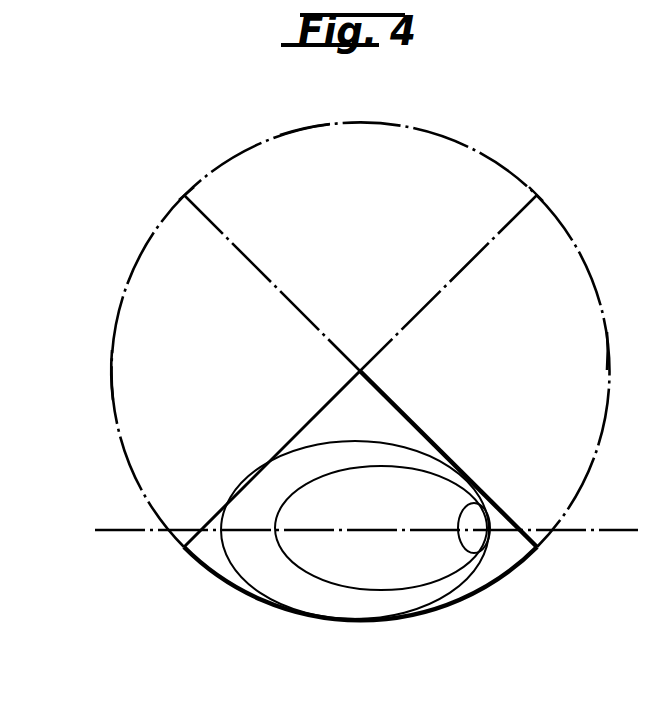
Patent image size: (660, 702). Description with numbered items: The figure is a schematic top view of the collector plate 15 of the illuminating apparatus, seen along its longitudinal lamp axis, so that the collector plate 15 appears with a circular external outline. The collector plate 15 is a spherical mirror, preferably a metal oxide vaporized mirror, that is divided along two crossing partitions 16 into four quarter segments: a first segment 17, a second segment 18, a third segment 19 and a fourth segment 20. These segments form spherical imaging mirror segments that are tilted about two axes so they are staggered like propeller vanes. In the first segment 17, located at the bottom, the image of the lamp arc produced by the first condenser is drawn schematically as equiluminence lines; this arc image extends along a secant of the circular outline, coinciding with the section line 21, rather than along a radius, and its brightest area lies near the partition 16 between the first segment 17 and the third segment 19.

The collector plate 15 is at (465, 142).
The partitions 16 is at (272, 276).
The first segment 17 is at (222, 560).
The second segment 18 is at (312, 150).
The third segment 19 is at (584, 350).
The fourth segment 20 is at (128, 384).
The section line 21 is at (122, 532).